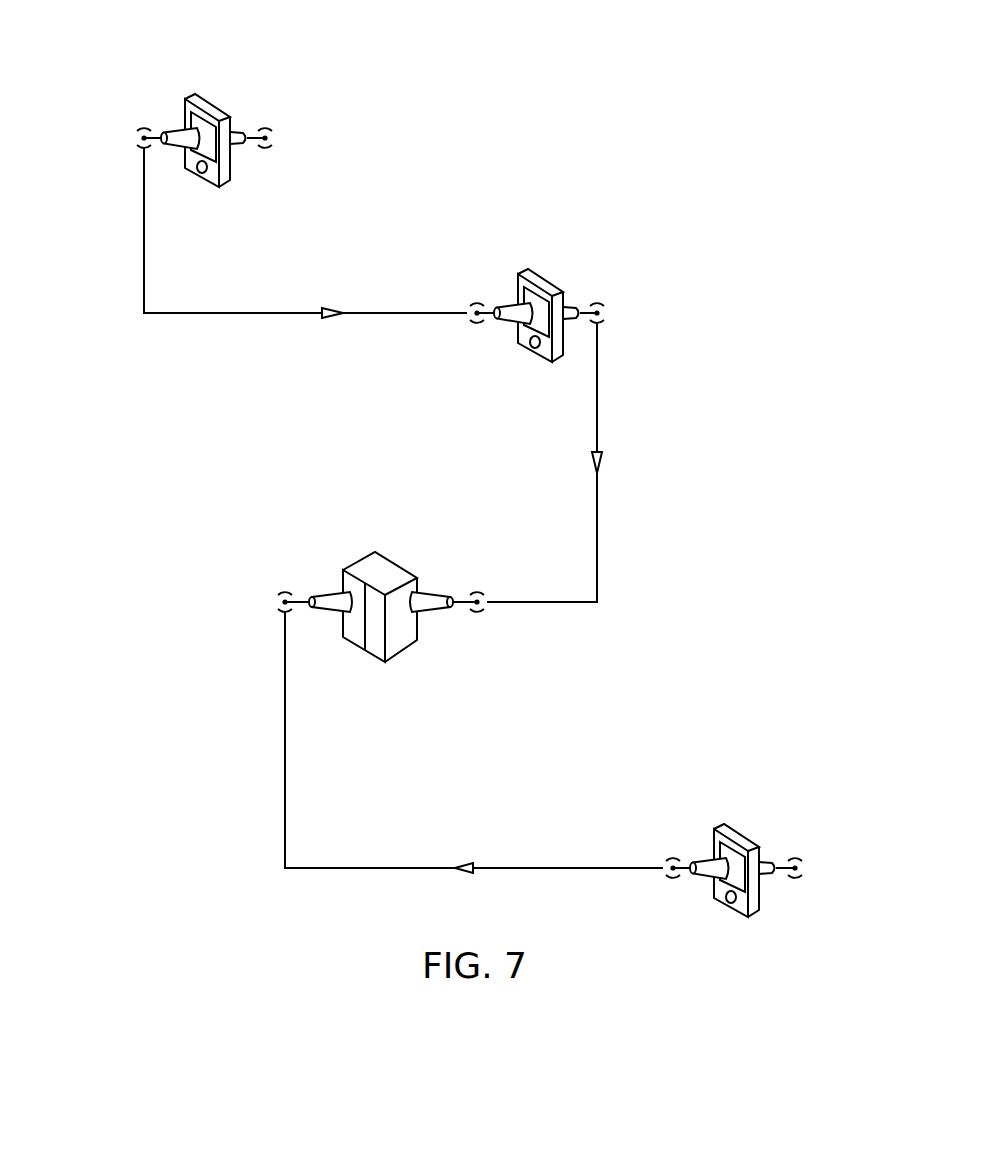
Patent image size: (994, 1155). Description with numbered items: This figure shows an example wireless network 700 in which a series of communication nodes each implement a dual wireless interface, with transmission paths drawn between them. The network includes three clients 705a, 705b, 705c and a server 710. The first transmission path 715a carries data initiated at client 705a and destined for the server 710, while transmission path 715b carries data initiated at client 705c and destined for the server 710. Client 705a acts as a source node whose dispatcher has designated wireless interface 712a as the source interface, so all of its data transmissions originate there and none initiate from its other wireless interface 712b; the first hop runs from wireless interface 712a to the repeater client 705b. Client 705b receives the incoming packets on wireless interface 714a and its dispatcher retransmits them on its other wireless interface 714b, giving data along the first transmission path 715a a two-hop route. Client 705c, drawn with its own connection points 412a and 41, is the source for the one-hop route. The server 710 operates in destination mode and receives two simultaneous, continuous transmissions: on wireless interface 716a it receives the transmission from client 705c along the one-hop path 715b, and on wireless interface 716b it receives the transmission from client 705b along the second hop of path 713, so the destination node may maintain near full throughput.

The fluid delivery system 700 is at (464, 111).
The client 705a is at (190, 96).
The client 705b is at (550, 272).
The client 705c is at (718, 828).
The wireless interface 712a is at (134, 138).
The wireless interface 712b is at (276, 138).
The wireless interface 714a is at (468, 308).
The wireless interface 714b is at (608, 313).
The path 713 is at (440, 510).
The first transmission path 715a is at (250, 314).
The transmission path 715b is at (598, 435).
The server 710 is at (360, 557).
The wireless interface 716a is at (278, 602).
The wireless interface 716b is at (478, 608).
The inlet connection of third pump device 412a is at (666, 866).
The outlet connection of third pump device 41 is at (807, 871).